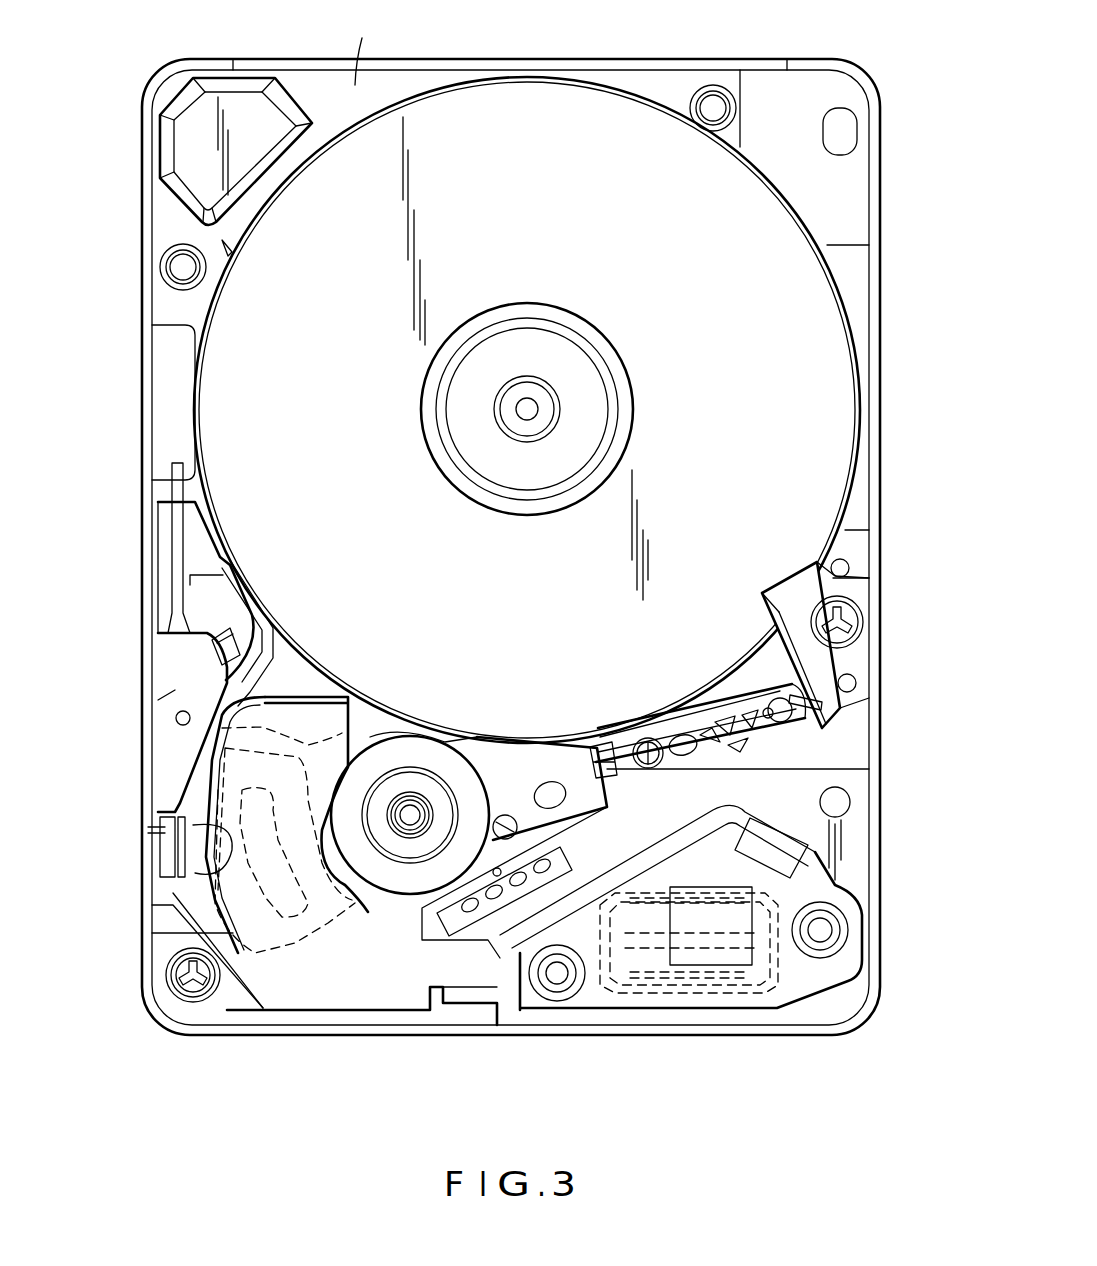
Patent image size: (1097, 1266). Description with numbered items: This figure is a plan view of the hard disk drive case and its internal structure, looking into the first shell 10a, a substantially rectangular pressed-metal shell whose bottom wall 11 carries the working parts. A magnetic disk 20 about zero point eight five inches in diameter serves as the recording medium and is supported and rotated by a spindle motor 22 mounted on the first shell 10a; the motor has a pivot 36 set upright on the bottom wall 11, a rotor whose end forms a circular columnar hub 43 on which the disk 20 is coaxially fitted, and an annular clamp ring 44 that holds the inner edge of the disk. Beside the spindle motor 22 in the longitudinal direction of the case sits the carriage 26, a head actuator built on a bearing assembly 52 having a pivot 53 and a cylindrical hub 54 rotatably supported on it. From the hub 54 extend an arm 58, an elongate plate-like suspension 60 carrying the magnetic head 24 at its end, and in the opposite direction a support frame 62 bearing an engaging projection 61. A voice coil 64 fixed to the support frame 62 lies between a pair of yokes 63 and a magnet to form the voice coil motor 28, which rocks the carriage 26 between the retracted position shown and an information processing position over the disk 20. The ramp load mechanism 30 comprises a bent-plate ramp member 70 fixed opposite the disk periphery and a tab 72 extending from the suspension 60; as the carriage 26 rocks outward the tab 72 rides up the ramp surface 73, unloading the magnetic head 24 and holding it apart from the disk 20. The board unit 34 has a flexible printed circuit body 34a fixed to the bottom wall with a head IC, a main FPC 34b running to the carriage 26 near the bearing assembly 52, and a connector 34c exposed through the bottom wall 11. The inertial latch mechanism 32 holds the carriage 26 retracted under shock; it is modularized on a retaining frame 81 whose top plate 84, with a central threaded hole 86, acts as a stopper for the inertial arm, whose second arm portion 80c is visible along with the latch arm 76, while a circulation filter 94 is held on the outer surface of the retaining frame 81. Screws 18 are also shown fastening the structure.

The first shell 10a is at (357, 44).
The bottom wall 11 is at (866, 268).
The screw 18 is at (712, 104).
The magnetic disk 20 is at (838, 345).
The spindle motor 22 is at (577, 300).
The magnetic head 24 is at (763, 690).
The carriage 26 is at (513, 748).
The voice coil motor 28 is at (314, 983).
The ramp load mechanism 30 is at (850, 660).
The inertial latch mechanism 32 is at (153, 778).
The board unit 34 is at (668, 1000).
The body 34a is at (722, 990).
The main flexible printed circuit board 34b is at (618, 858).
The connector 34c is at (775, 1000).
The pivot 36 is at (525, 408).
The hub 43 is at (498, 345).
The clamp ring 44 is at (615, 362).
The bearing assembly 52 is at (414, 748).
The pivot 53 is at (420, 810).
The hub 54 is at (398, 760).
The arm 58 is at (566, 748).
The suspension 60 is at (650, 738).
The engaging projection 61 is at (190, 827).
The support frame 62 is at (370, 915).
The yokes 63 is at (408, 990).
The voice coil 64 is at (270, 965).
The ramp member 70 is at (798, 580).
The tab 72 is at (800, 710).
The ramp surface 73 is at (770, 592).
The latch arm 76 is at (176, 851).
The second arm portion 80c is at (175, 538).
The retaining frame 81 is at (158, 695).
The top plate 84 is at (170, 655).
The threaded hole 86 is at (176, 718).
The circulation filter 94 is at (232, 645).